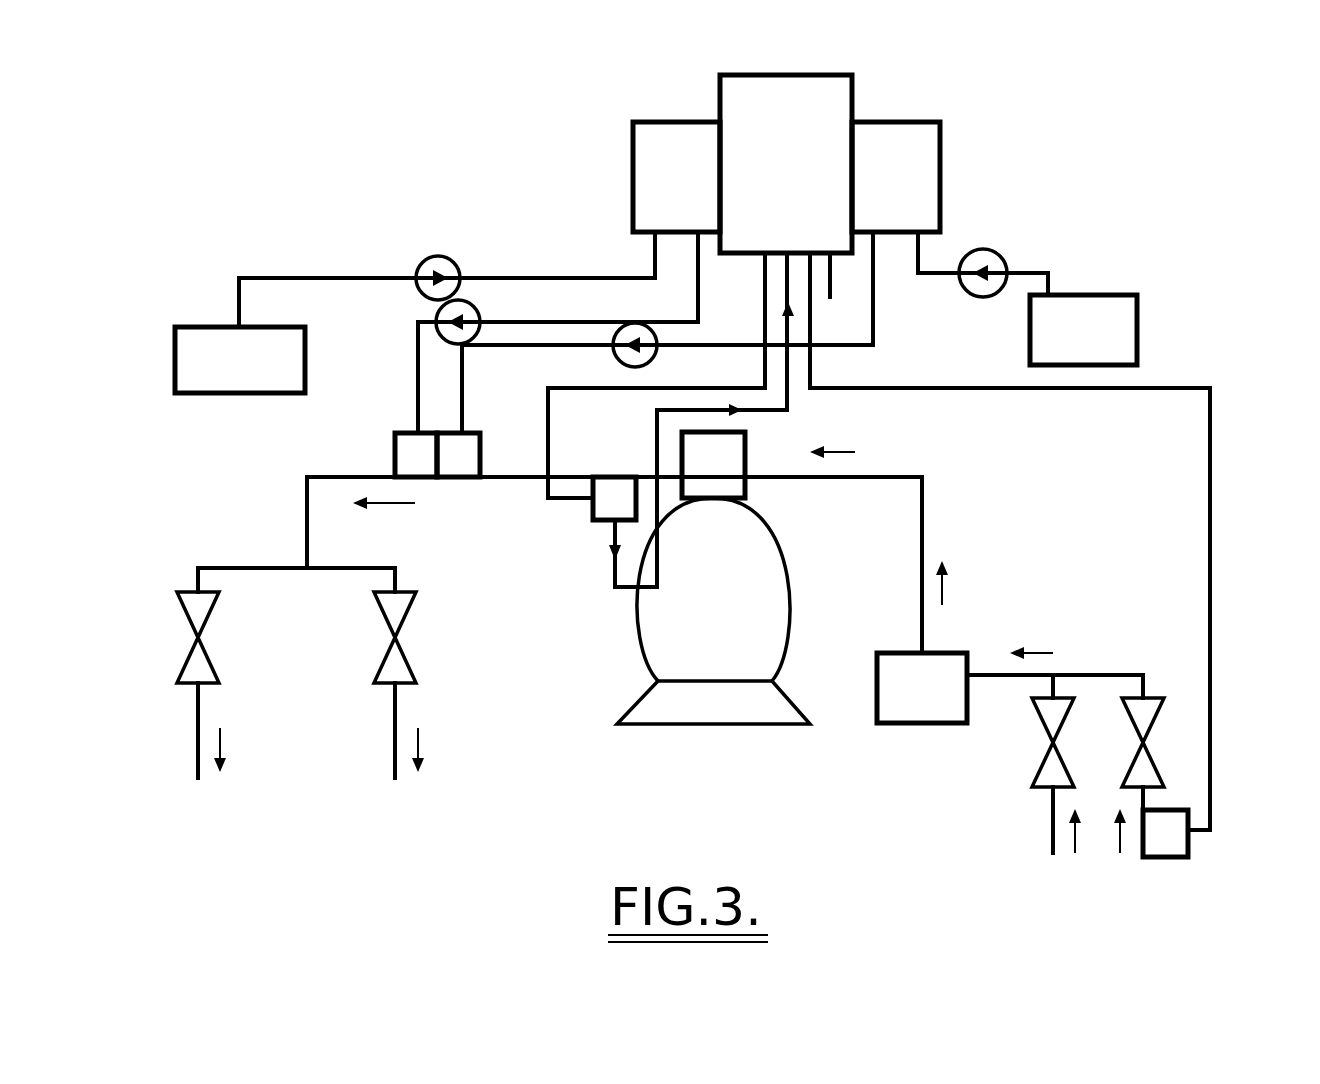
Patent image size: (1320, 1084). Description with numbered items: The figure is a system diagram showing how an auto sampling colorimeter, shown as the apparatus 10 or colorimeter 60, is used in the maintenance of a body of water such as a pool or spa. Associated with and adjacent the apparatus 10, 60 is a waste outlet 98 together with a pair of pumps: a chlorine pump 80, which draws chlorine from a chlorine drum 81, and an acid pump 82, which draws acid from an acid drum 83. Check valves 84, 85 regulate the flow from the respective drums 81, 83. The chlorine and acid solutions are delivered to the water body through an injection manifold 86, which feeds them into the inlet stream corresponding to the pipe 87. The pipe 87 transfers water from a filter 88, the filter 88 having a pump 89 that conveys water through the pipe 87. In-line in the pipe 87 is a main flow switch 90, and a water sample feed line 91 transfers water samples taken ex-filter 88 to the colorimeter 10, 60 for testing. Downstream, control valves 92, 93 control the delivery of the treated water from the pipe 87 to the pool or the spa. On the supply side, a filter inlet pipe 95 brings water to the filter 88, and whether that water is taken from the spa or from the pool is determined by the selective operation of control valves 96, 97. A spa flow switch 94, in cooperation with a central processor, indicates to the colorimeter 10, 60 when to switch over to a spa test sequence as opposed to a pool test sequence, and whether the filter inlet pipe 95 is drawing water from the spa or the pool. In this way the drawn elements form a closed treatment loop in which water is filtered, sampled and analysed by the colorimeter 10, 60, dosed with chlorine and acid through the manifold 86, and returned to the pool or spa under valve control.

The apparatus 10 is at (853, 162).
The colorimeter 60 is at (840, 108).
The chlorine pump 80 is at (690, 196).
The chlorine drum 81 is at (217, 305).
The acid pump 82 is at (905, 190).
The acid drum 83 is at (1137, 296).
The check valve 84 is at (455, 262).
The check valve 85 is at (1000, 250).
The injection manifold 86 is at (397, 433).
The pipe 87 is at (307, 477).
The filter 88 is at (729, 740).
The pump 89 is at (935, 706).
The main flow switch 90 is at (586, 530).
The water sample feed line 91 is at (625, 592).
The control valve 92 is at (180, 665).
The control valve 93 is at (376, 665).
The spa flow switch 94 is at (1165, 858).
The filter inlet pipe 95 is at (925, 532).
The control valve 96 is at (1036, 821).
The control valve 97 is at (1165, 745).
The waste outlet 98 is at (833, 290).